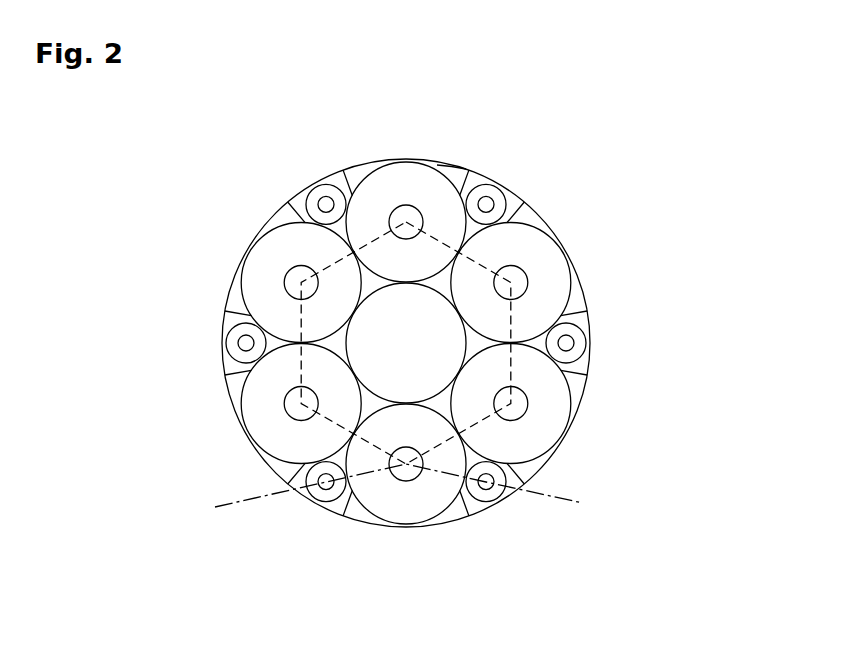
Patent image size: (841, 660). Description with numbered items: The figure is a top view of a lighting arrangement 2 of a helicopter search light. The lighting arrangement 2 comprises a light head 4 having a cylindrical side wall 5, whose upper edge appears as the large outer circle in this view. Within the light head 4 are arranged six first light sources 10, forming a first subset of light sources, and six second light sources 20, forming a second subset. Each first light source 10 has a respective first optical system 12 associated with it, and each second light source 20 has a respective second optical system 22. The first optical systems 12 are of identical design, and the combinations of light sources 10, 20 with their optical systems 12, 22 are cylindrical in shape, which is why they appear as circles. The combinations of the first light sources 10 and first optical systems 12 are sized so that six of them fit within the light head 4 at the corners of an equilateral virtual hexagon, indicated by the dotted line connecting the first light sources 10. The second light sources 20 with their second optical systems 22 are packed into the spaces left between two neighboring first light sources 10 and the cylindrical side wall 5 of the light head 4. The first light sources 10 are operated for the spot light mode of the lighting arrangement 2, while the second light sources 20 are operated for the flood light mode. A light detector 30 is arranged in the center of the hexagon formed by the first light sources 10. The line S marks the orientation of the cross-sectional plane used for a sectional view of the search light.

The lighting arrangement 2 is at (686, 260).
The light head 4 is at (226, 395).
The cylindrical side wall 5 is at (452, 163).
The first light source 10 is at (418, 200).
The first optical system 12 is at (383, 185).
The second light source 20 is at (325, 192).
The second optical system 22 is at (325, 178).
The light detector 30 is at (420, 357).
The line S is at (553, 500).